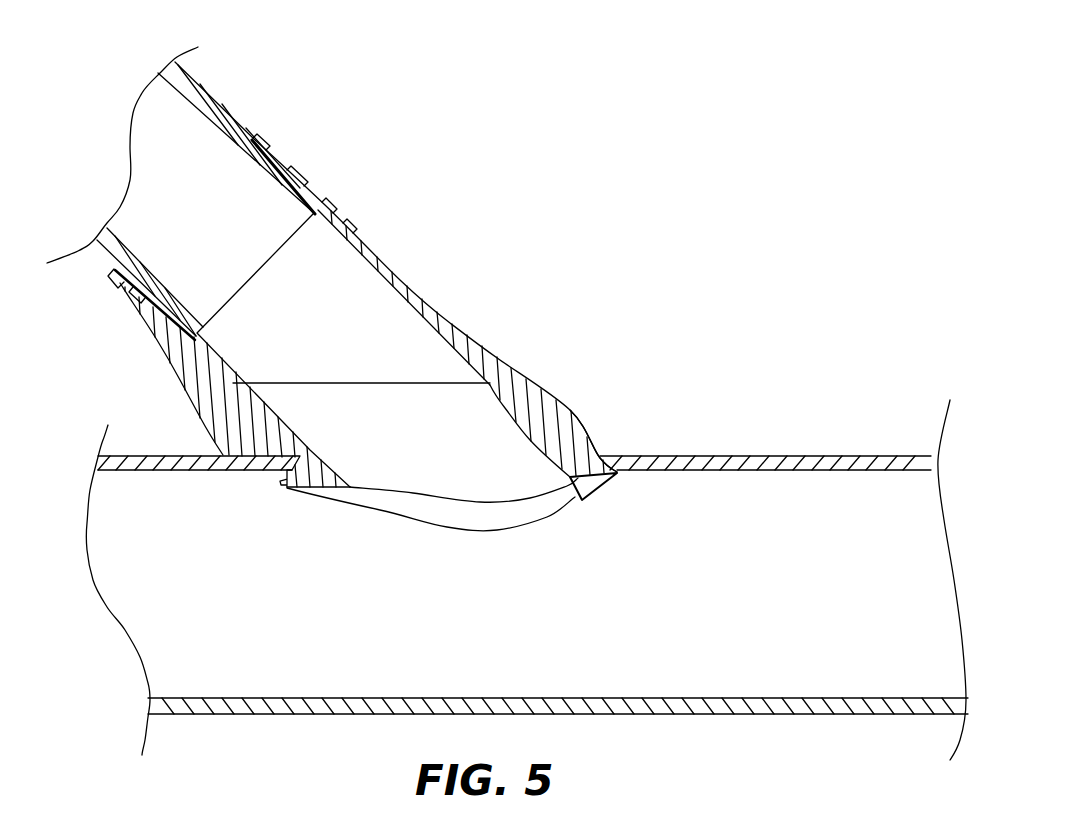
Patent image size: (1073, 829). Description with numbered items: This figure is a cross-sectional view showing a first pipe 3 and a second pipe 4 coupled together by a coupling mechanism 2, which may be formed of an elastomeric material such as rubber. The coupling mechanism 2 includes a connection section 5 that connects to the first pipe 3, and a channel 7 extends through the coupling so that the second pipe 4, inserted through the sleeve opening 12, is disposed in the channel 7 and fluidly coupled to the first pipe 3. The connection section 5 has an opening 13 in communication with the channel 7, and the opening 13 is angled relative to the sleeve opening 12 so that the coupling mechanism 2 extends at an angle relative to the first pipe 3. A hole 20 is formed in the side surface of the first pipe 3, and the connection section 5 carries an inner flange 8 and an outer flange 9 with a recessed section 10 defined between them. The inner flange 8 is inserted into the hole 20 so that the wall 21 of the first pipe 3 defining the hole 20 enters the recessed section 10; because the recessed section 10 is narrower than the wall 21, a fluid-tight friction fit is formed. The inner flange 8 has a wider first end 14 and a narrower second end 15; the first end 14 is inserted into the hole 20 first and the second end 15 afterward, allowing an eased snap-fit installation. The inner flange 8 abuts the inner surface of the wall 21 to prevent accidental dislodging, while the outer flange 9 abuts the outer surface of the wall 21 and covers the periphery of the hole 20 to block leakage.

The coupling mechanism 2 is at (513, 168).
The first pipe 3 is at (814, 452).
The second pipe 4 is at (203, 92).
The connection section 5 is at (540, 315).
The channel 7 is at (333, 277).
The inner flange 8 is at (284, 481).
The outer flange 9 is at (594, 460).
The recessed section 10 is at (257, 449).
The sleeve opening 12 is at (110, 265).
The opening 13 is at (400, 500).
The first end 14 is at (300, 494).
The second end 15 is at (580, 488).
The hole 20 is at (584, 452).
The wall 21 is at (672, 463).